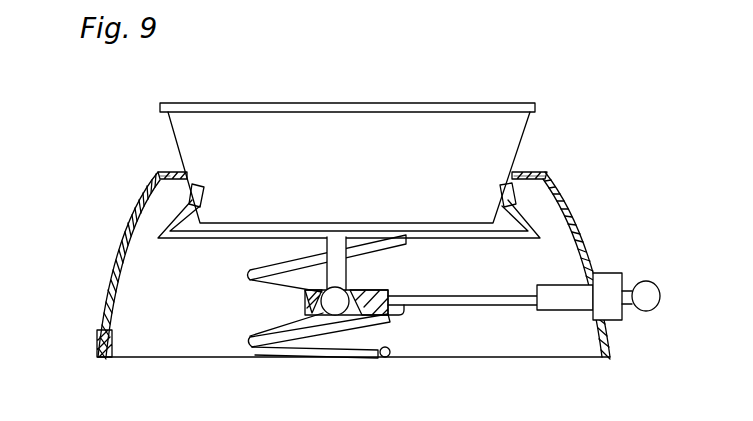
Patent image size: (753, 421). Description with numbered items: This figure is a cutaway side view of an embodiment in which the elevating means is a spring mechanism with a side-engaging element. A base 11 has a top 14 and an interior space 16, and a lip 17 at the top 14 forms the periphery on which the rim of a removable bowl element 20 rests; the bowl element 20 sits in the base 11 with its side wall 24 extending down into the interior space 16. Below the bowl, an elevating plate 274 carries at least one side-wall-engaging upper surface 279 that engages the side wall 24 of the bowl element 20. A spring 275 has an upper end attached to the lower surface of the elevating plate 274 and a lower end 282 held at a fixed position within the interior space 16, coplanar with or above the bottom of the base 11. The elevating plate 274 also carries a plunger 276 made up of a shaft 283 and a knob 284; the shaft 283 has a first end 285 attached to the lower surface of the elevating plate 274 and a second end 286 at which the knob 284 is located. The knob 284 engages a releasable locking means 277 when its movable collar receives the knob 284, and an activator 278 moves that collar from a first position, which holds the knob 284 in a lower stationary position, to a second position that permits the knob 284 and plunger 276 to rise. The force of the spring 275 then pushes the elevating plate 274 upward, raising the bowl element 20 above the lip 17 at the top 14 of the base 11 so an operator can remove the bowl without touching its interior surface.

The base 11 is at (48, 158).
The top 14 is at (148, 172).
The interior space 16 is at (190, 325).
The lip 17 is at (174, 171).
The bowl element 20 is at (356, 144).
The side wall 24 is at (368, 197).
The elevating plate 274 is at (492, 237).
The spring 275 is at (415, 240).
The plunger 276 is at (324, 296).
The releasable locking means 277 is at (308, 306).
The activator 278 is at (468, 300).
The side-wall-engaging upper surface 279 is at (205, 189).
The lower end 282 is at (389, 345).
The shaft 283 is at (340, 274).
The knob 284 is at (300, 336).
The first end 285 is at (325, 243).
The second end 286 is at (350, 282).